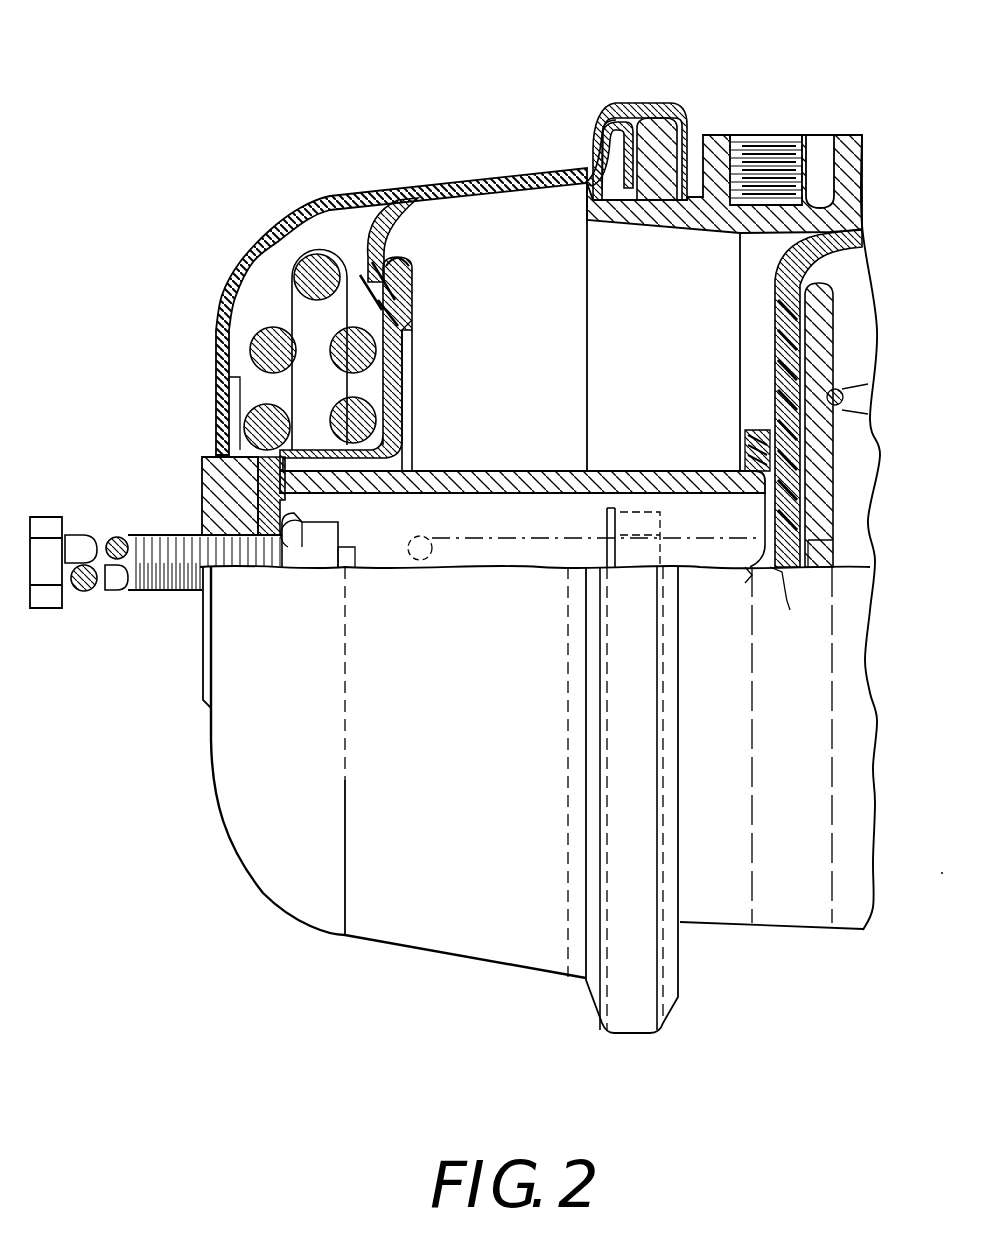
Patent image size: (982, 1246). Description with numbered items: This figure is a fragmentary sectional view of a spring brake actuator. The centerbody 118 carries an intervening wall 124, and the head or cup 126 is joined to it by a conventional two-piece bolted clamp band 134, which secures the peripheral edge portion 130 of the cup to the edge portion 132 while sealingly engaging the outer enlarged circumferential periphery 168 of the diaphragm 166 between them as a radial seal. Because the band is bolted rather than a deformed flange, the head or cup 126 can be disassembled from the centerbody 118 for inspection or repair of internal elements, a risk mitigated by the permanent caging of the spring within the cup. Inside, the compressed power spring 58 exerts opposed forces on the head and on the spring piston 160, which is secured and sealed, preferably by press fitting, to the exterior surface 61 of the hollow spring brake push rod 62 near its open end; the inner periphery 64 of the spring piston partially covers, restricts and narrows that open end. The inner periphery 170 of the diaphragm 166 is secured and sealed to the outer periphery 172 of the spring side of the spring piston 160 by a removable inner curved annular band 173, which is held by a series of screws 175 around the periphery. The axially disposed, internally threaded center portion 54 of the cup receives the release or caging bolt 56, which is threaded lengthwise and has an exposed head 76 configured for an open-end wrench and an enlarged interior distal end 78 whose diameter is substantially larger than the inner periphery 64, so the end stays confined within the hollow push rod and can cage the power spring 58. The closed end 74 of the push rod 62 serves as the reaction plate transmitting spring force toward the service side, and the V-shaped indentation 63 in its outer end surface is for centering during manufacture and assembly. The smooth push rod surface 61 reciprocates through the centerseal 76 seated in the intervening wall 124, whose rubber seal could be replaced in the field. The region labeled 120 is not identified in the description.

The internally-threaded center portion 54 is at (205, 460).
The release bolt 56 is at (540, 535).
The power spring 58 is at (272, 262).
The exterior surface of push rod 61 is at (612, 470).
The spring brake push rod 62 is at (568, 453).
The V-shaped indentation 63 is at (748, 587).
The inner periphery of spring piston 64 is at (335, 498).
The closed end of push rod 74 is at (782, 572).
The exposed head 76 is at (48, 520).
The enlarged interior distal end 78 is at (650, 545).
The centerbody 118 is at (832, 103).
The housing body 120 is at (708, 393).
The intervening wall 124 is at (778, 322).
The head or cup 126 is at (333, 197).
The peripheral edge portion of cup 130 is at (606, 125).
The edge portion 132 is at (690, 130).
The clamp band 134 is at (625, 103).
The spring piston 160 is at (418, 420).
The diaphragm 166 is at (520, 213).
The outer enlarged circumferential periphery of diaphragm 168 is at (598, 165).
The inner periphery of diaphragm 170 is at (414, 274).
The outer periphery of spring piston 172 is at (402, 262).
The inner curved annular band 173 is at (343, 258).
The screws 175 is at (418, 316).